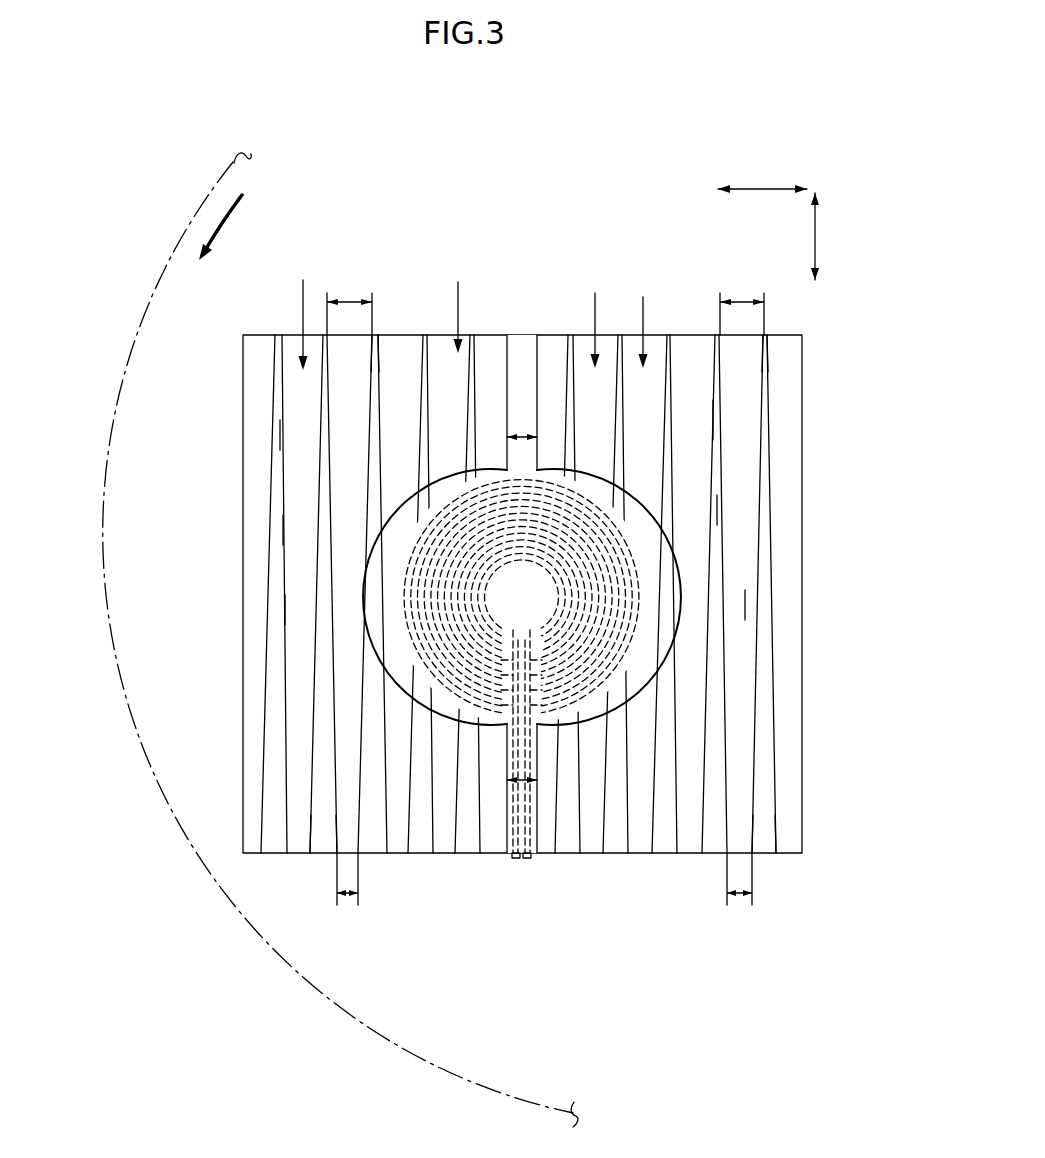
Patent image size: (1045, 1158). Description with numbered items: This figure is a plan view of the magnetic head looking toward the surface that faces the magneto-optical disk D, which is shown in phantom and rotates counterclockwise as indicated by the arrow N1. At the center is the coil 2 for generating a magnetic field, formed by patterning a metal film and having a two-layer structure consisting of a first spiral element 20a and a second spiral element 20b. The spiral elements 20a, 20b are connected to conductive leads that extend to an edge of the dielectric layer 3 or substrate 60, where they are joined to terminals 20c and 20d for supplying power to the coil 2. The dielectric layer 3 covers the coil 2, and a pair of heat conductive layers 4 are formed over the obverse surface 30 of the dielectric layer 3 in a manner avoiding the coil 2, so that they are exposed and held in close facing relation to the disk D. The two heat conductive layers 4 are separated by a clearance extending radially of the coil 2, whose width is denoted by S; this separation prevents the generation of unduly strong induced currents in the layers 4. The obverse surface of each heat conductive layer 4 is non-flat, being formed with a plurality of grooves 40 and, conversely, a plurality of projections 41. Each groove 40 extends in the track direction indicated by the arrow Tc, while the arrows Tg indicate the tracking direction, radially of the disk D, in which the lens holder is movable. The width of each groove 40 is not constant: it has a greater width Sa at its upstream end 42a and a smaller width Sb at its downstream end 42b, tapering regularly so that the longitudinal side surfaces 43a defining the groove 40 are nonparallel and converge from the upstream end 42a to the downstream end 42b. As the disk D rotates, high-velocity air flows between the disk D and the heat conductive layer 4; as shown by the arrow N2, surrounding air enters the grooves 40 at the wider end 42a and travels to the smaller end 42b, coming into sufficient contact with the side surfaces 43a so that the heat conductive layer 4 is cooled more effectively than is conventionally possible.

The coil 2 is at (559, 666).
The dielectric layer 3 is at (617, 843).
The heat conductive layers 4 is at (445, 350).
The first spiral element 20a is at (614, 668).
The second spiral element 20b is at (597, 677).
The terminal 20c is at (514, 859).
The terminal 20d is at (529, 859).
The obverse surface 30 is at (524, 352).
The grooves 40 is at (345, 463).
The projections 41 is at (320, 548).
The upstream end 42a is at (360, 360).
The downstream end 42b is at (336, 838).
The longitudinal side surfaces 43a is at (290, 611).
The substrate 60 is at (592, 843).
The magneto-optical disk D is at (173, 288).
The arrow indicating disk rotation N1 is at (220, 218).
The arrow indicating air flow N2 is at (657, 279).
The width of the clearance S is at (527, 778).
The groove width at upstream end Sa is at (545, 302).
The groove width at downstream end Sb is at (561, 879).
The tracking direction Tg is at (762, 172).
The track direction Tc is at (832, 236).